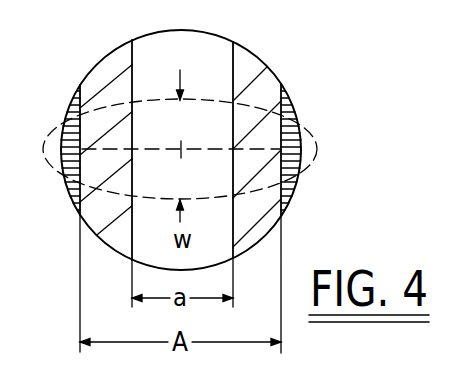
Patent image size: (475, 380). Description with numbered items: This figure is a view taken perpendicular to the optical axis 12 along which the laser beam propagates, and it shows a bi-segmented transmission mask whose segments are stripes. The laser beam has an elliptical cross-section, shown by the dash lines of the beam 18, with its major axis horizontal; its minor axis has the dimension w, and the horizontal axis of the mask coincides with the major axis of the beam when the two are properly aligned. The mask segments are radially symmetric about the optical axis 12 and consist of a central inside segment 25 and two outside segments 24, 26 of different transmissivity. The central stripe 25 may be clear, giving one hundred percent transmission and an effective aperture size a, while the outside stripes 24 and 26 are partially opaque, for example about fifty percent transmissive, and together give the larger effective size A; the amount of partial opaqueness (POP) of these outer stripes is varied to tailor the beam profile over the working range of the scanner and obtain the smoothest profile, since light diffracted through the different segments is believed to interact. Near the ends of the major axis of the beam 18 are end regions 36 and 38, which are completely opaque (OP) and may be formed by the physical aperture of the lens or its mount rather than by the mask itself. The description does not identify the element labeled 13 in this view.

The optical axis 12 is at (182, 148).
The center line 13 is at (117, 147).
The elliptical beam 18 is at (314, 147).
The outside segment 24 is at (100, 73).
The inside segment 25 is at (207, 48).
The outside segment 26 is at (250, 67).
The end region 36 is at (77, 194).
The end region 38 is at (287, 190).
The opaque OP is at (76, 115).
The partial opaqueness POP is at (99, 217).